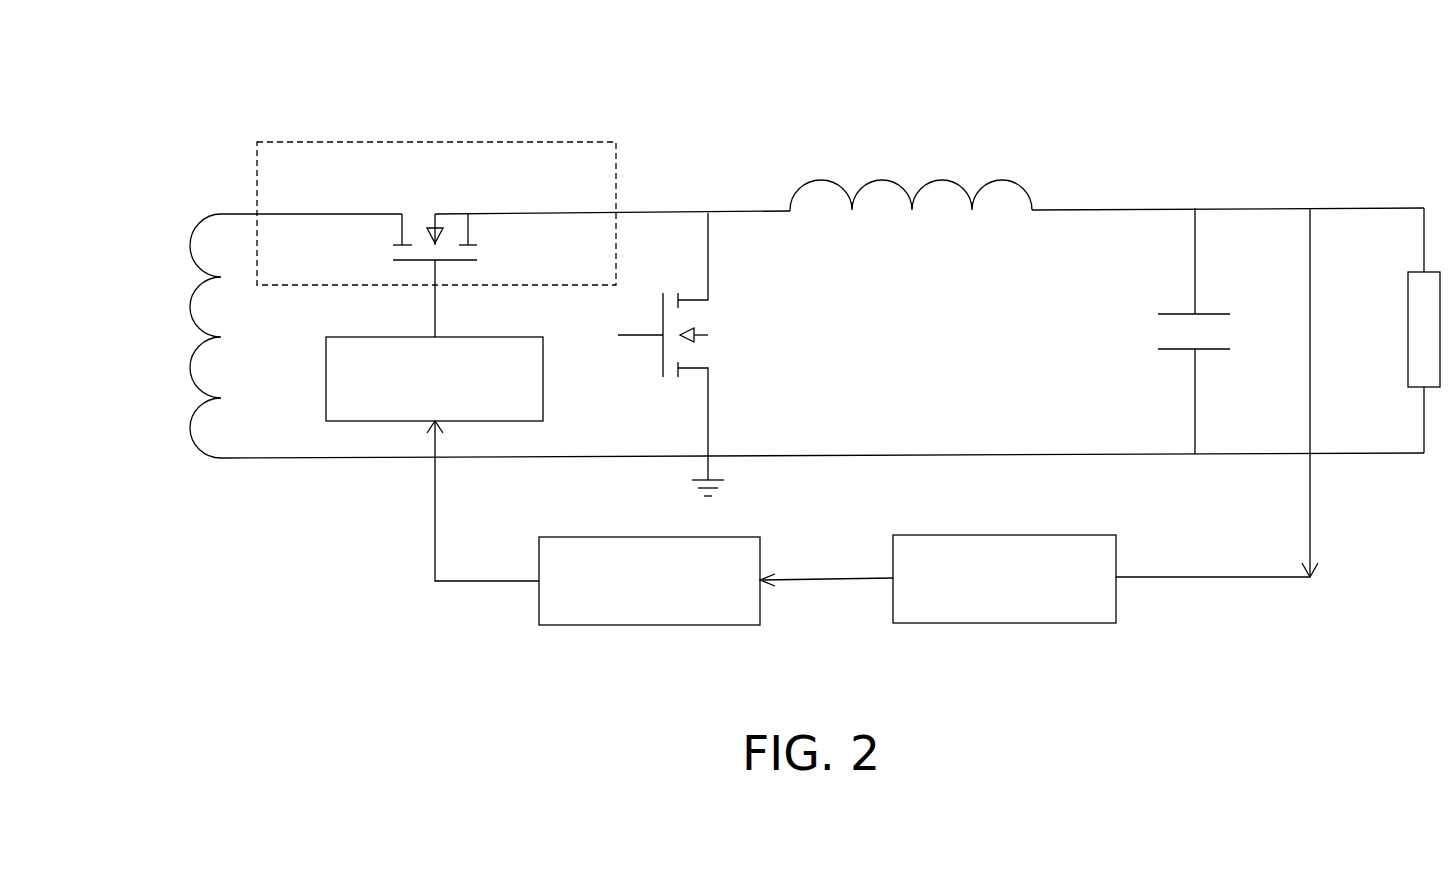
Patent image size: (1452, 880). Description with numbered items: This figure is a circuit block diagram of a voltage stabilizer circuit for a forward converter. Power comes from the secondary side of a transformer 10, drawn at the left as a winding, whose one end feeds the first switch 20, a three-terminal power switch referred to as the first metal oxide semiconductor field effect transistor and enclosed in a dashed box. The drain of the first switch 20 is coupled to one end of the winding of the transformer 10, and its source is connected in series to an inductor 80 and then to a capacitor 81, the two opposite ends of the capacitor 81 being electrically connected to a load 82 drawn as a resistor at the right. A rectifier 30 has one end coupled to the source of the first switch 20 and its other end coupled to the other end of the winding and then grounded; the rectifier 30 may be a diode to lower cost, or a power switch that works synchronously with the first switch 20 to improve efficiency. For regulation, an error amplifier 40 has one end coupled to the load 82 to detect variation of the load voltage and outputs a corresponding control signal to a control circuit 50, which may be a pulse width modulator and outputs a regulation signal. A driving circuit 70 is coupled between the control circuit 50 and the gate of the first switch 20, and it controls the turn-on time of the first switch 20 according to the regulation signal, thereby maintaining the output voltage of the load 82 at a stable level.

The transformer 10 is at (188, 327).
The first switch 20 is at (462, 142).
The rectifier 30 is at (715, 312).
The error amplifier 40 is at (1004, 625).
The control circuit 50 is at (639, 626).
The driving circuit 70 is at (545, 403).
The inductor 80 is at (890, 180).
The capacitor 81 is at (1215, 312).
The load 82 is at (1406, 345).